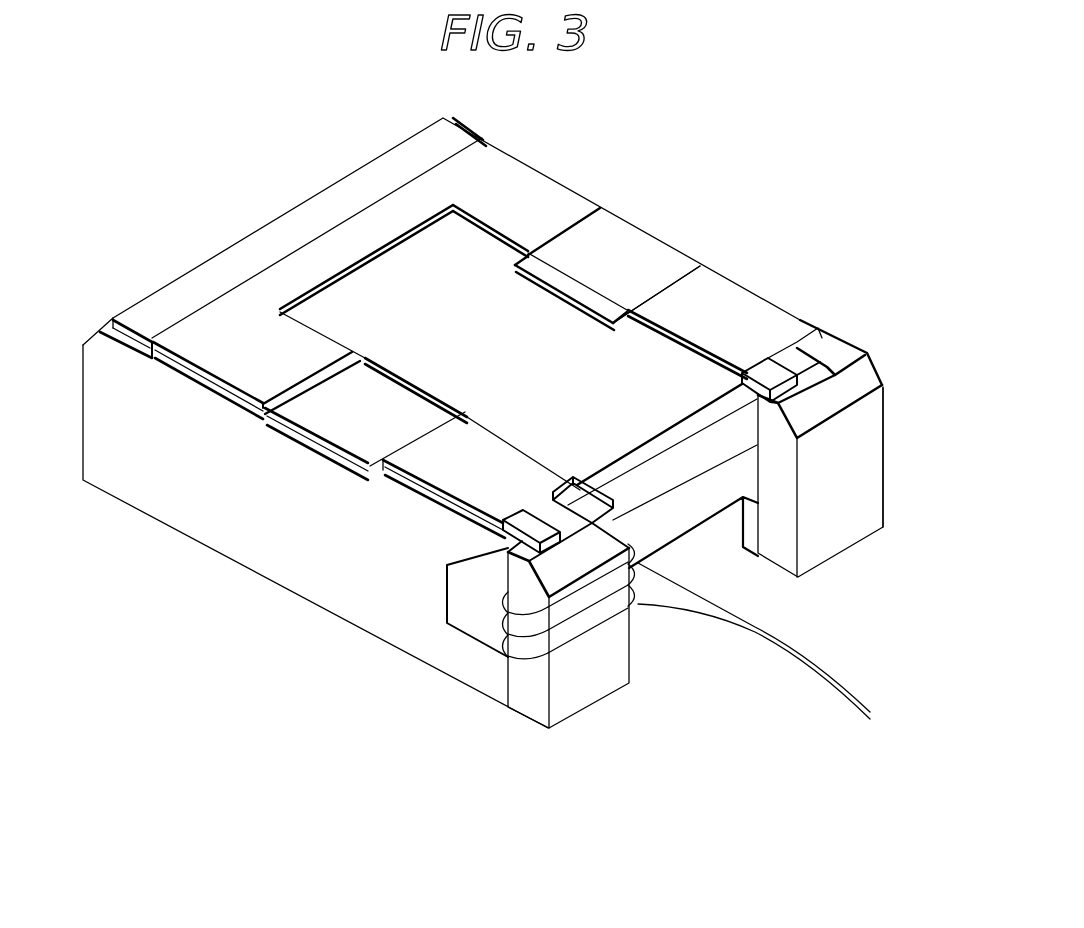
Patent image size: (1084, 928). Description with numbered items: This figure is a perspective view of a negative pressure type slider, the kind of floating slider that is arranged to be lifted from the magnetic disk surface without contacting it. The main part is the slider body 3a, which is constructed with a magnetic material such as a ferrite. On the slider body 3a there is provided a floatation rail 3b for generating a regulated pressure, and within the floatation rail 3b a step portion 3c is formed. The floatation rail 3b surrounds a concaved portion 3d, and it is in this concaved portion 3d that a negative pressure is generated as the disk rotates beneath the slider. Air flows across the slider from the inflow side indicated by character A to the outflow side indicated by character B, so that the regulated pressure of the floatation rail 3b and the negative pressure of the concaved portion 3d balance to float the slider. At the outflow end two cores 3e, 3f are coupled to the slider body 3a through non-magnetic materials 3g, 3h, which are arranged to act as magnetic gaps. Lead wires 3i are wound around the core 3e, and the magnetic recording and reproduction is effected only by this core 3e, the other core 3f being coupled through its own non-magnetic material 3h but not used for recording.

The slider body 3a is at (310, 563).
The floatation rail 3b is at (485, 175).
The step portion 3c is at (622, 243).
The concaved portion 3d is at (317, 310).
The core 3e is at (605, 678).
The core 3f is at (863, 517).
The non-magnetic material 3g is at (553, 505).
The non-magnetic material 3h is at (787, 347).
The lead wires 3i is at (817, 688).
The inflow side A is at (310, 200).
The outflow side B is at (702, 450).